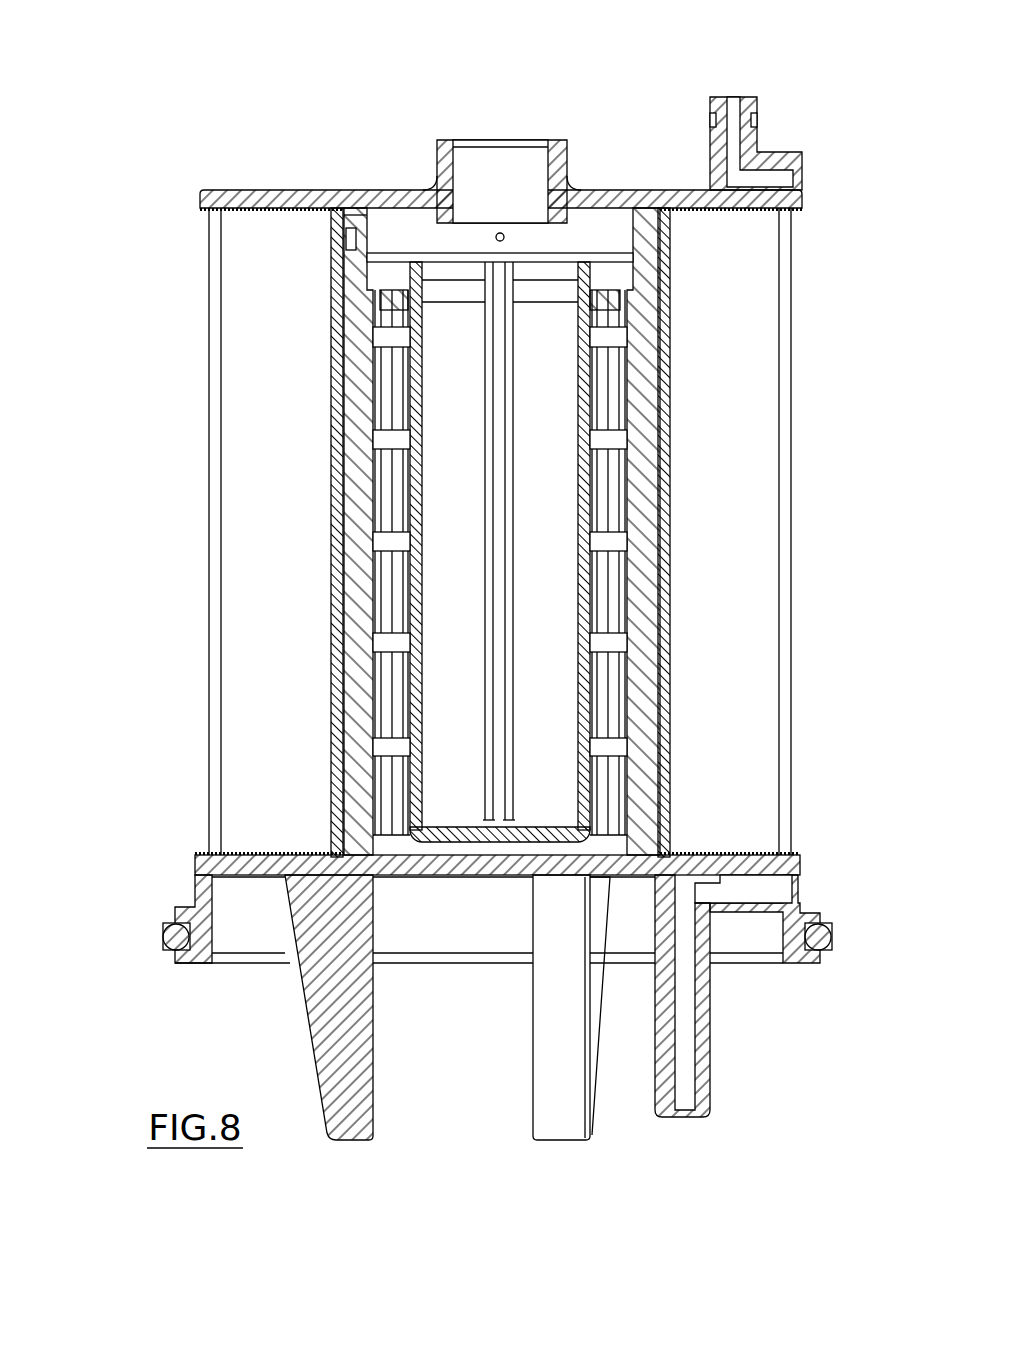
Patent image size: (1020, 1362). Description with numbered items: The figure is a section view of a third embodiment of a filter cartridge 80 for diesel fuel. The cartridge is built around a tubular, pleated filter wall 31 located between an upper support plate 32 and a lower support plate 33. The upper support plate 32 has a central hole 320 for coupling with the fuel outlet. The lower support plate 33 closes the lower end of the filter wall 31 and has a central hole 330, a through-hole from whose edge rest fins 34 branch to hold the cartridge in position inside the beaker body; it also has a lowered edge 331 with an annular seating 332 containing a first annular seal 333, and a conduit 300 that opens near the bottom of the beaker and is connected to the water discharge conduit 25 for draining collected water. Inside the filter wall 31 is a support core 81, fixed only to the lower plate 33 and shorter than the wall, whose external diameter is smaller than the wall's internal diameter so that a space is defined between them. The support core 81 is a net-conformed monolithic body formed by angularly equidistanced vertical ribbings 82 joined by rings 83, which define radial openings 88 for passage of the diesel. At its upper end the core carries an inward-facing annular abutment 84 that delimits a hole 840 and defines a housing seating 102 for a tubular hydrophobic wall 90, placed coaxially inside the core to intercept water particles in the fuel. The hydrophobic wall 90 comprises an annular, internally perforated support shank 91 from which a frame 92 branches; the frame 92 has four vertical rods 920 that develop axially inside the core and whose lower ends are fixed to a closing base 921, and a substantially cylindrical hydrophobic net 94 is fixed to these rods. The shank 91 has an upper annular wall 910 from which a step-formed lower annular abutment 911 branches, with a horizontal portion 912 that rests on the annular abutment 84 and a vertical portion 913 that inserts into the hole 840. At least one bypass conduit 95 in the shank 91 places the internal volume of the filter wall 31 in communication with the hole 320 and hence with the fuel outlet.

The filter cartridge 80 is at (240, 108).
The upper support plate 32 is at (228, 188).
The upper annular wall 910 is at (338, 220).
The horizontal portion 912 is at (345, 290).
The lower annular abutment 911 is at (398, 288).
The vertical portion 913 is at (387, 302).
The support core 81 is at (335, 468).
The tubular hydrophobic wall 90 is at (405, 542).
The vertical ribbings 82 is at (345, 700).
The filter wall 31 is at (287, 622).
The frame 92 is at (427, 634).
The hydrophobic net 94 is at (555, 662).
The vertical rods 920 is at (420, 445).
The bypass conduit 95 is at (500, 233).
The housing seating 102 is at (437, 250).
The central hole 320 is at (540, 167).
The support shank 91 is at (607, 210).
The discharge conduit 25 is at (753, 132).
The annular abutment 84 is at (650, 347).
The hole 840 is at (650, 398).
The radial openings 88 is at (610, 472).
The rings 83 is at (648, 545).
The lower support plate 33 is at (190, 865).
The first annular seal 333 is at (163, 932).
The annular seating 332 is at (170, 948).
The lowered edge 331 is at (217, 913).
The central hole 330 is at (370, 863).
The closing base 921 is at (497, 843).
The rest fins 34 is at (317, 1073).
The conduit 300 is at (707, 1040).